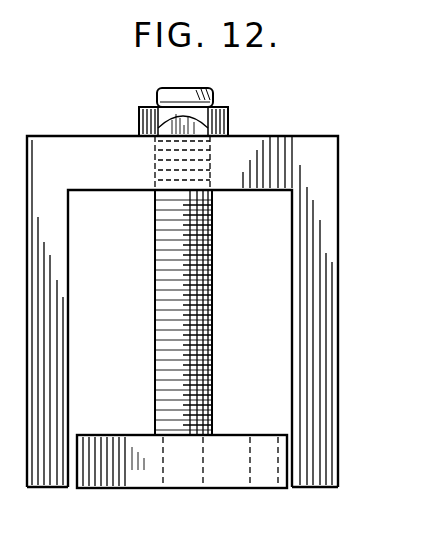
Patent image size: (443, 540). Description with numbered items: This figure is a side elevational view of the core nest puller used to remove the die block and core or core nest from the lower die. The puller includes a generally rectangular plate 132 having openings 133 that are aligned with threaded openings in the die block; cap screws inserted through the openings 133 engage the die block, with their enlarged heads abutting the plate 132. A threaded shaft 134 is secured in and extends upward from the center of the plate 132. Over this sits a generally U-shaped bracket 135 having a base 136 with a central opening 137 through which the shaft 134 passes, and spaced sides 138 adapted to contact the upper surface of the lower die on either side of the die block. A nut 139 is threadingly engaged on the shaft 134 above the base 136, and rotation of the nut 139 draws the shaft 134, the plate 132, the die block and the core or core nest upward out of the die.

The plate 132 is at (227, 472).
The openings 133 is at (102, 432).
The threaded shaft 134 is at (213, 281).
The bracket 135 is at (345, 133).
The base 136 is at (258, 136).
The central opening 137 is at (150, 160).
The spaced sides 138 is at (68, 299).
The nut 139 is at (230, 107).